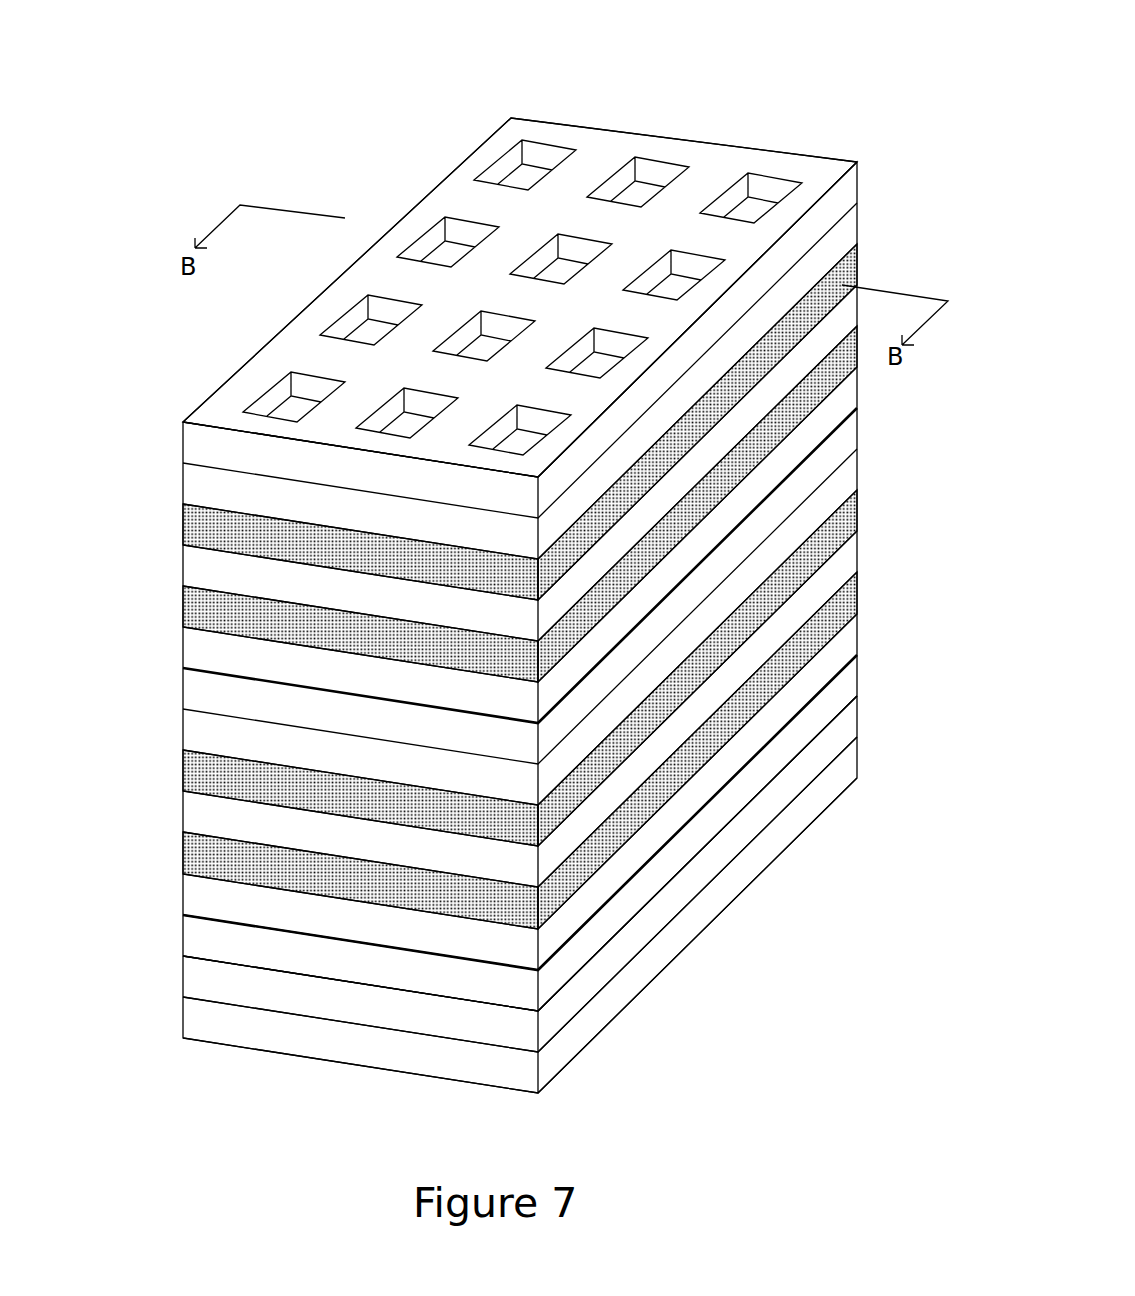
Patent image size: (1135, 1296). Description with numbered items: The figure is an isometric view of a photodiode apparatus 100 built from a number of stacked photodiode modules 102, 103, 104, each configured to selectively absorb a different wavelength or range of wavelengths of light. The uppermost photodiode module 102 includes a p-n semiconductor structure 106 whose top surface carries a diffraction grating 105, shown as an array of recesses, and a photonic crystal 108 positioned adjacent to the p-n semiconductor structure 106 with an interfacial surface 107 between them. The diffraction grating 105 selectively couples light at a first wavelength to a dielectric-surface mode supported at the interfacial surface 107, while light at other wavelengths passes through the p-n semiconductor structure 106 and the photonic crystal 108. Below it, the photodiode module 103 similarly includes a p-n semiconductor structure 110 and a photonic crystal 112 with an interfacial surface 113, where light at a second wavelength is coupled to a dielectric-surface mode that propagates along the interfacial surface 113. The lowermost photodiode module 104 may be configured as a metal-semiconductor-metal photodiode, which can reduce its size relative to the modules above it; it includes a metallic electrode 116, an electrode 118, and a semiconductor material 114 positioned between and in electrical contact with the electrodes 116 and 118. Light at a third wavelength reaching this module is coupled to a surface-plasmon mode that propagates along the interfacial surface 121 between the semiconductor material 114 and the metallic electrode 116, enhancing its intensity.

The photodiode apparatus 100 is at (812, 47).
The diffraction grating 105 is at (591, 145).
The interfacial surface 107 is at (256, 516).
The photodiode module 102 is at (108, 422).
The photodiode module 103 is at (108, 668).
The photodiode module 104 is at (108, 915).
The p-n semiconductor structure 106 is at (172, 422).
The photonic crystal 108 is at (172, 507).
The p-n semiconductor structure 110 is at (172, 668).
The photonic crystal 112 is at (172, 750).
The interfacial surface 113 is at (453, 790).
The semiconductor material 114 is at (510, 1027).
The metallic electrode 116 is at (510, 987).
The electrode 118 is at (510, 1075).
The interfacial surface 121 is at (333, 978).